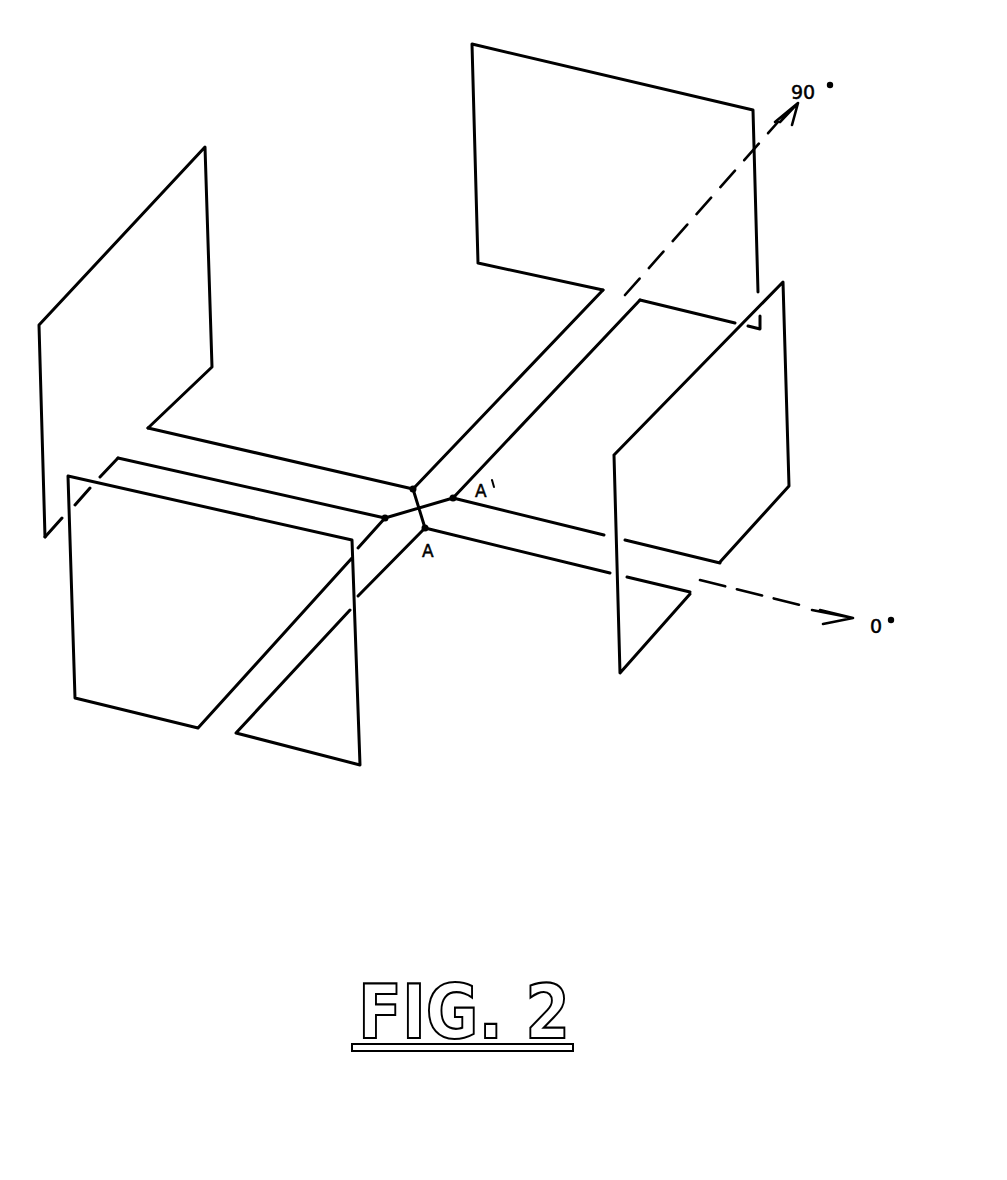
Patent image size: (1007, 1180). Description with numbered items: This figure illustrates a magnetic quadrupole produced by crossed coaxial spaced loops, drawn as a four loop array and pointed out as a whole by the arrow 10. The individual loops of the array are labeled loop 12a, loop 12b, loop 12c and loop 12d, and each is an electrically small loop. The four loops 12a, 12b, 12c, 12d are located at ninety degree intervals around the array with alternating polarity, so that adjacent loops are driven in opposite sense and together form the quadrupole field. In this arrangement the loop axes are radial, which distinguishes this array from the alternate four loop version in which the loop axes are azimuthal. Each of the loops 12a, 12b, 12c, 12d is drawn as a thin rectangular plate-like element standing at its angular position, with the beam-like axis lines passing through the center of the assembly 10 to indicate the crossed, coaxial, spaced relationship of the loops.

The polarization rotator assembly 10 is at (802, 465).
The loop 12a is at (789, 350).
The loop 12b is at (576, 67).
The loop 12c is at (110, 247).
The loop 12d is at (140, 714).